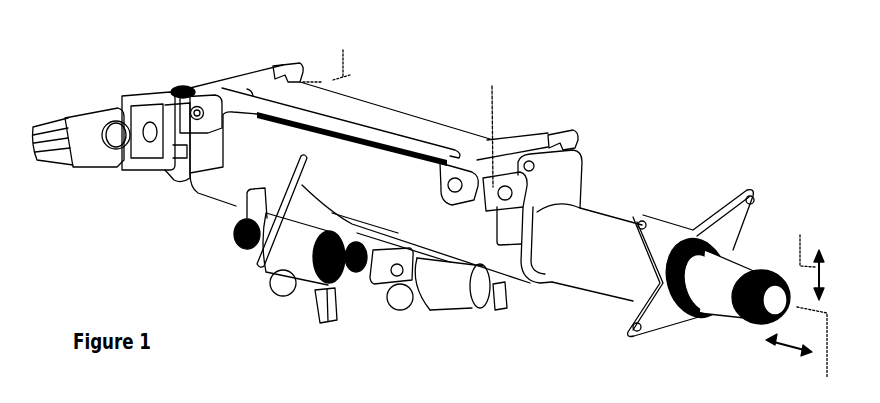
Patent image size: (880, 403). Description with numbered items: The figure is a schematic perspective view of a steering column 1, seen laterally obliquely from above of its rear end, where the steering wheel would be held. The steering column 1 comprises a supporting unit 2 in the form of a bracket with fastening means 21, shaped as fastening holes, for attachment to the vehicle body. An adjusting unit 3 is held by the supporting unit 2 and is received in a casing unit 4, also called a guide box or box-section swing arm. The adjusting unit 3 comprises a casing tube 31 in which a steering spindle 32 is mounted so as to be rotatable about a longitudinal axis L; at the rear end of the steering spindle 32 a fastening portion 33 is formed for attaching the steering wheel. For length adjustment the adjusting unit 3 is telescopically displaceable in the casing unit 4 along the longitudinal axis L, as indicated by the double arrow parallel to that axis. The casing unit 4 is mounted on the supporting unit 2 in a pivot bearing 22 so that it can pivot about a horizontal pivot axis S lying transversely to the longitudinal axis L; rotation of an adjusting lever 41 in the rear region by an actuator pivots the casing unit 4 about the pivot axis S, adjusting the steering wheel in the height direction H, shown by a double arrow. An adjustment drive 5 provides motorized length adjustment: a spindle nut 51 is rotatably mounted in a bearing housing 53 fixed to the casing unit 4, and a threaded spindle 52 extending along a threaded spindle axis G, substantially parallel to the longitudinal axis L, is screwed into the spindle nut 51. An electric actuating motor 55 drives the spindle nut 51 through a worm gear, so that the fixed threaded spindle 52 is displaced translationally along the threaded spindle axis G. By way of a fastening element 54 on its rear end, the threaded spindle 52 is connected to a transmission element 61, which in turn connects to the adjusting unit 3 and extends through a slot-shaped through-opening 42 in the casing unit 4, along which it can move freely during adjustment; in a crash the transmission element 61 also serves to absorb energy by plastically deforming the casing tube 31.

The steering column 1 is at (467, 55).
The supporting unit 2 is at (375, 117).
The fastening means 21 is at (290, 65).
The pivot bearing 22 is at (187, 88).
The adjusting unit 3 is at (630, 213).
The casing tube 31 is at (571, 221).
The steering spindle 32 is at (729, 277).
The fastening portion 33 is at (756, 325).
The casing unit 4 is at (230, 177).
The adjusting lever 41 is at (493, 127).
The through-opening 42 is at (483, 288).
The adjustment drive 5 is at (277, 310).
The spindle nut 51 is at (325, 320).
The threaded spindle 52 is at (341, 298).
The bearing housing 53 is at (283, 248).
The fastening element 54 is at (403, 310).
The electric actuating motor 55 is at (374, 286).
The transmission element 61 is at (428, 262).
The threaded spindle axis G is at (232, 231).
The height direction H is at (810, 258).
The pivot axis S is at (326, 56).
The longitudinal axis L is at (829, 372).